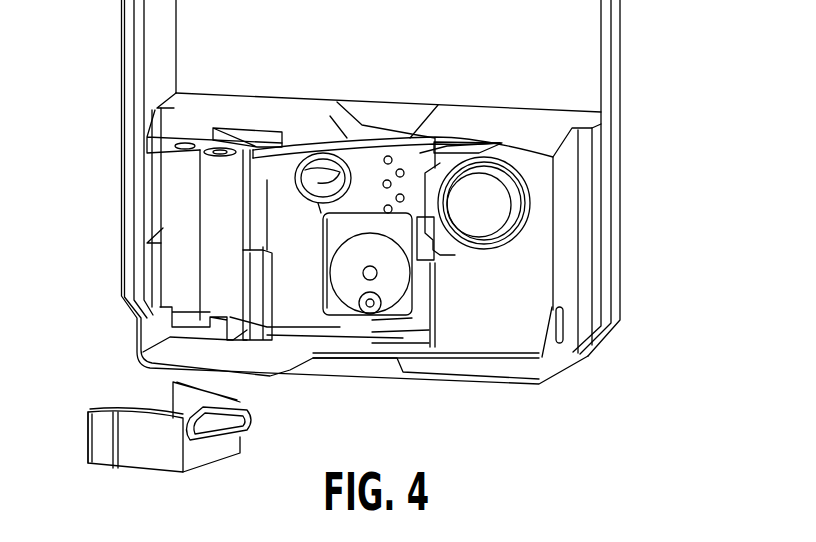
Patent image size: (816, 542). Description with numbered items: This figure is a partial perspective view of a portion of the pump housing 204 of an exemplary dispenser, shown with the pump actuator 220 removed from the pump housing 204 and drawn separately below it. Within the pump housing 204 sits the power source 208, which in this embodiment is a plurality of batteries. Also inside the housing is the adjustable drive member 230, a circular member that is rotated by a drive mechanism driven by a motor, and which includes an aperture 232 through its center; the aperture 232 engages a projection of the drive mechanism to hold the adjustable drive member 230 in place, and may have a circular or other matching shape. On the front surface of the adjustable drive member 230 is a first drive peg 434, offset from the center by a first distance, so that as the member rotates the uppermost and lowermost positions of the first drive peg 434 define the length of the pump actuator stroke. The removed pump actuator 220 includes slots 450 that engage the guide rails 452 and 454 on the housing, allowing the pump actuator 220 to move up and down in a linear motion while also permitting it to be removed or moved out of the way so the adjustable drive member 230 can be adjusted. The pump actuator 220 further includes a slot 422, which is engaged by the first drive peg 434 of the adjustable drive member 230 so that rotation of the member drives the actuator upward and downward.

The pump housing 204 is at (563, 218).
The power source 208 is at (182, 225).
The guide rail 452 is at (268, 298).
The aperture 232 is at (368, 273).
The first drive peg 434 is at (366, 312).
The adjustable drive member 230 is at (398, 288).
The guide rail 454 is at (435, 305).
The slot 422 is at (232, 425).
The pump actuator 220 is at (189, 453).
The slots 450 is at (97, 472).